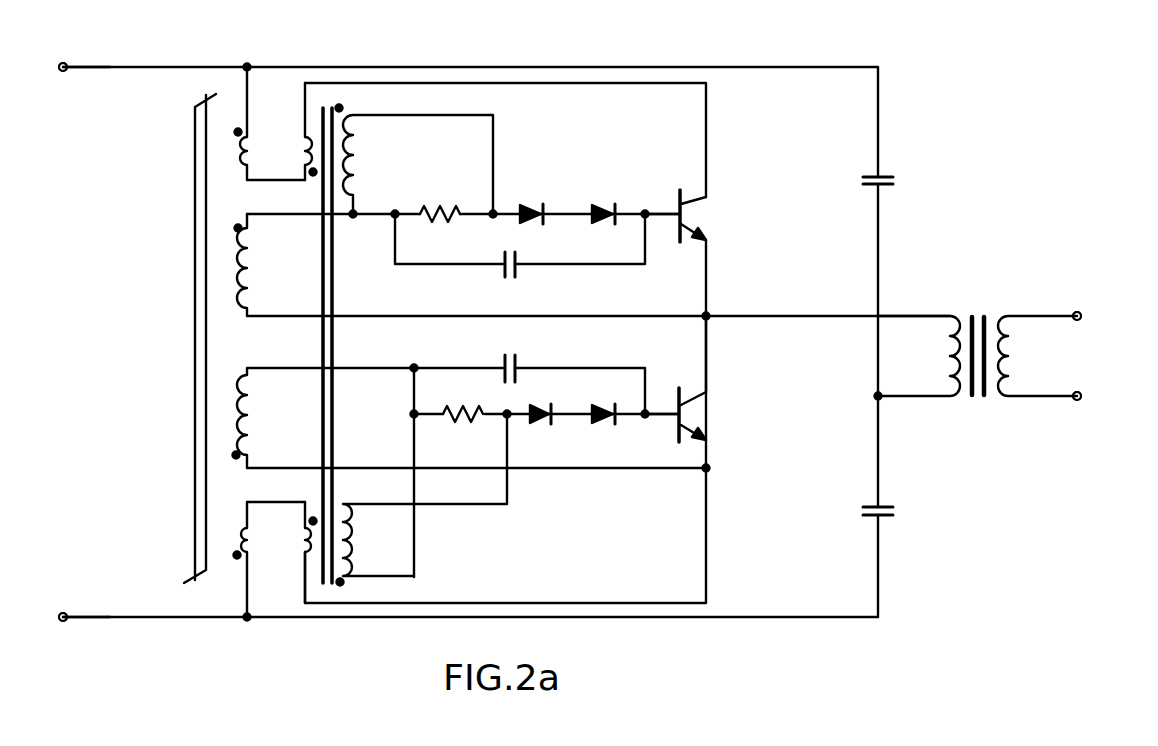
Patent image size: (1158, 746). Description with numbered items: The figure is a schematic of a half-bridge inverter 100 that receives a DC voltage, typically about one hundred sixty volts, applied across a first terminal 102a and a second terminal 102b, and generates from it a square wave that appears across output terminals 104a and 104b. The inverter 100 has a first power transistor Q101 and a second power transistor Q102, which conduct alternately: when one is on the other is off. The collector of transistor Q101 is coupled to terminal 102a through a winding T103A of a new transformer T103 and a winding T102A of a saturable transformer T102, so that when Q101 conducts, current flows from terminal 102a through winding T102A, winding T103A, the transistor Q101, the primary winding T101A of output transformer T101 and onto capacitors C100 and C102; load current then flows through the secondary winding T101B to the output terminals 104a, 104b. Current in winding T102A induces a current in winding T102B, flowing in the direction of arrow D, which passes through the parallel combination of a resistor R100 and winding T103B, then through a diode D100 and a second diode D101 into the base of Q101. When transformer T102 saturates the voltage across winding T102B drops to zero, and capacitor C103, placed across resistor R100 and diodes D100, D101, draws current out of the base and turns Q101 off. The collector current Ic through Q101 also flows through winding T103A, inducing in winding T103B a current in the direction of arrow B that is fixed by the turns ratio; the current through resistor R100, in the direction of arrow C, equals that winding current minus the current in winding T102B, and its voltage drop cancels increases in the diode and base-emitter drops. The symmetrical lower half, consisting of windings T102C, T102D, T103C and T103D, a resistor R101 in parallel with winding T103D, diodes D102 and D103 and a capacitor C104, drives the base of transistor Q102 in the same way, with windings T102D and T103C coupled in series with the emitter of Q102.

The inverter 100 is at (686, 50).
The first terminal 102a is at (160, 52).
The second terminal 102b is at (106, 617).
The output terminal 104a is at (1050, 316).
The output terminal 104b is at (1050, 396).
The transformer T101 is at (963, 400).
The primary winding T101A is at (950, 316).
The secondary winding T101B is at (1010, 383).
The transformer T102 is at (195, 345).
The winding T102A is at (237, 128).
The winding T102B is at (239, 278).
The winding T102C is at (240, 423).
The winding T102D is at (237, 562).
The transformer T103 is at (332, 338).
The winding T103A is at (306, 135).
The winding T103B is at (355, 142).
The winding T103C is at (308, 555).
The winding T103D is at (350, 558).
The capacitor C100 is at (893, 172).
The capacitor C102 is at (893, 503).
The capacitor C103 is at (518, 268).
The capacitor C104 is at (517, 358).
The resistor R100 is at (428, 207).
The resistor R101 is at (475, 402).
The diode D100 is at (537, 203).
The second diode D101 is at (603, 203).
The diode D102 is at (545, 404).
The diode D103 is at (606, 424).
The first power transistor Q101 is at (685, 207).
The second power transistor Q102 is at (684, 405).
The arrow B is at (507, 127).
The arrow C is at (465, 232).
The arrow D is at (265, 240).
The collector current Ic is at (719, 100).